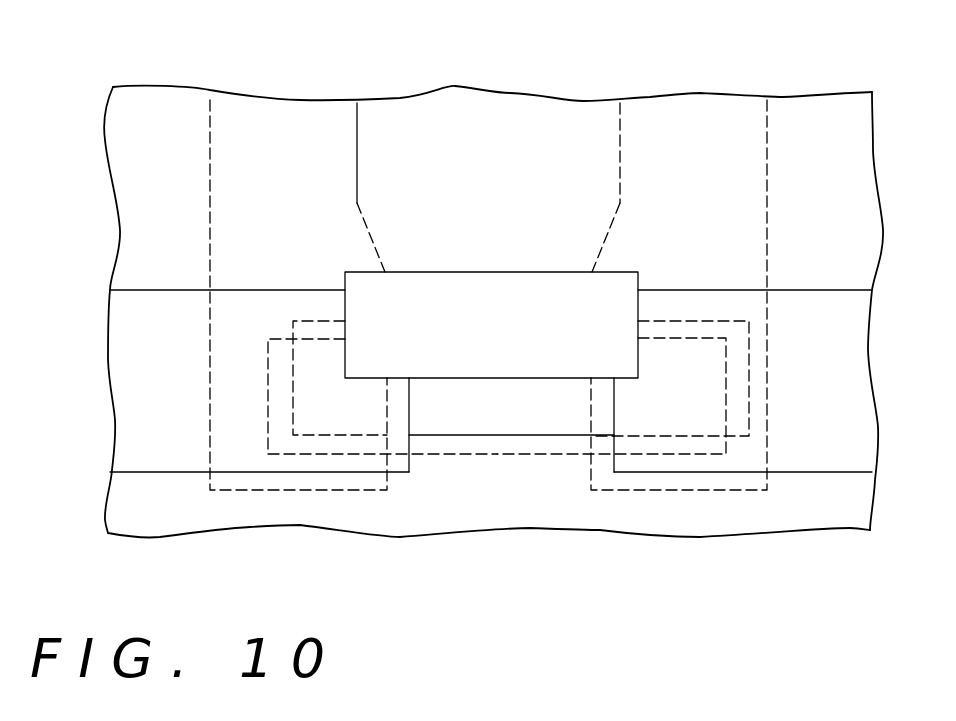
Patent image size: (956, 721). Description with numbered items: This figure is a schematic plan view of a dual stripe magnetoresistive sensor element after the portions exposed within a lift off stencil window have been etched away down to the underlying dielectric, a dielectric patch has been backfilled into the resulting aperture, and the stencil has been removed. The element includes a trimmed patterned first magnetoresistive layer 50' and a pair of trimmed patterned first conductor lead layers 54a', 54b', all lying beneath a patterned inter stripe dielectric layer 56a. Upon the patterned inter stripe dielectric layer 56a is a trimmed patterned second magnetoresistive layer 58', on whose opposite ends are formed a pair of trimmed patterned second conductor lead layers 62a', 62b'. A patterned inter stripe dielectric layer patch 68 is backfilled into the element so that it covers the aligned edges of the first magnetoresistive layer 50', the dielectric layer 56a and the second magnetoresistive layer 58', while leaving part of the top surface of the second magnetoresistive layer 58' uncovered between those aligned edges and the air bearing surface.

The trimmed patterned first magnetoresistive layer 50' is at (507, 489).
The trimmed patterned first conductor lead layer 54a' is at (298, 254).
The trimmed patterned first conductor lead layer 54b' is at (679, 254).
The patterned inter stripe dielectric layer 56a is at (474, 153).
The trimmed patterned second magnetoresistive layer 58' is at (511, 507).
The trimmed patterned second conductor lead layer 62a' is at (303, 461).
The trimmed patterned second conductor lead layer 62b' is at (684, 461).
The patterned inter stripe dielectric layer patch 68 is at (531, 307).